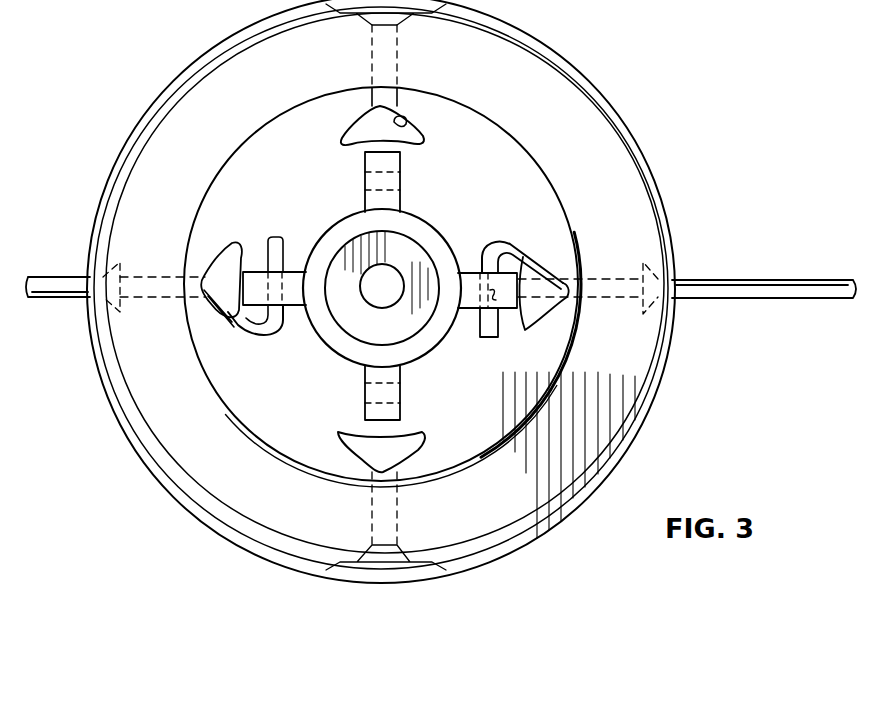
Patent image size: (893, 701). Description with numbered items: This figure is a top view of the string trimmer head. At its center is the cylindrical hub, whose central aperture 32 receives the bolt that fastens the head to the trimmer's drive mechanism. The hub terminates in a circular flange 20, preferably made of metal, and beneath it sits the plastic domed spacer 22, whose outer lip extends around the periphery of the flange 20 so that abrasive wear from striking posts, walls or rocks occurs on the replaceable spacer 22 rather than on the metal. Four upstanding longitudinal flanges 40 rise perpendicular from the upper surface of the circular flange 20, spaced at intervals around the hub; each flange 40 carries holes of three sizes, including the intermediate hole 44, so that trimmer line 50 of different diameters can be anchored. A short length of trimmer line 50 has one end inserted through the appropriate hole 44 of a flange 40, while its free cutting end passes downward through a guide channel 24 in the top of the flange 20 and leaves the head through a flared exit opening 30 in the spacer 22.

The circular flange 20 is at (575, 142).
The domed spacer 22 is at (660, 401).
The guide channel 24 is at (413, 123).
The flared exit opening 30 is at (662, 333).
The central aperture 32 is at (308, 348).
The upstanding longitudinal flange 40 is at (472, 273).
The intermediate hole 44 is at (496, 339).
The trimmer line 50 is at (708, 266).